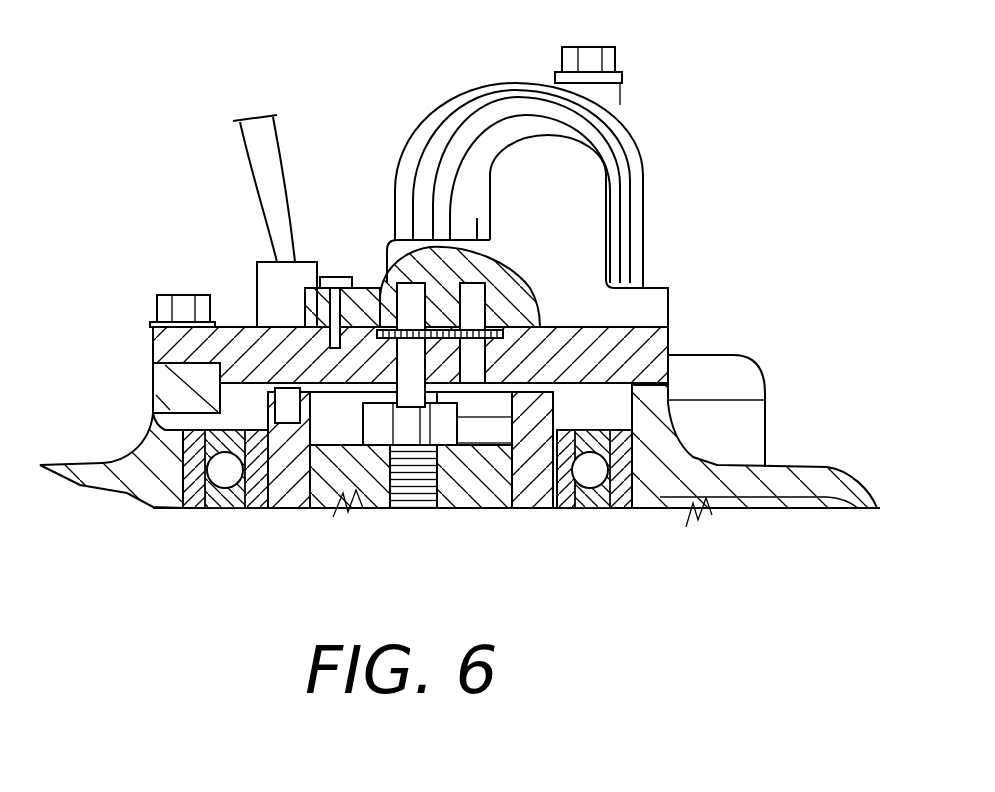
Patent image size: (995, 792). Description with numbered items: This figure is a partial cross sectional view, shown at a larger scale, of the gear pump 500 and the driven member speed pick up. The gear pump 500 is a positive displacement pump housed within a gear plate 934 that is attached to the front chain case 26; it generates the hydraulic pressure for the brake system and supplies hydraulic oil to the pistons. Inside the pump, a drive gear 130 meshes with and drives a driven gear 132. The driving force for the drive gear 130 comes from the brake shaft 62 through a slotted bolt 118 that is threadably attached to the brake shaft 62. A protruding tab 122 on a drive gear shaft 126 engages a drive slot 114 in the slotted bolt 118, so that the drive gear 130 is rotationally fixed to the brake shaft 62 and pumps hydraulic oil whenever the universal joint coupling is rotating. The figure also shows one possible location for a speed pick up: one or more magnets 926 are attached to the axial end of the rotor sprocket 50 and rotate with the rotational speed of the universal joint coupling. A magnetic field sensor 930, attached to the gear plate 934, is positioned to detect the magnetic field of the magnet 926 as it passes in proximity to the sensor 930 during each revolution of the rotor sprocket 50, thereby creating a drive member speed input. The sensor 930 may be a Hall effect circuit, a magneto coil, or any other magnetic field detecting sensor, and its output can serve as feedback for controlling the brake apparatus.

The front chain case 26 is at (673, 342).
The rotor sprocket 50 is at (288, 508).
The brake shaft 62 is at (507, 497).
The drive slot 114 is at (445, 393).
The slotted bolt 118 is at (425, 405).
The protruding tab 122 is at (440, 375).
The drive gear shaft 126 is at (395, 336).
The drive gear 130 is at (383, 293).
The driven gear 132 is at (497, 300).
The gear pump 500 is at (390, 226).
The magnet 926 is at (280, 416).
The magnetic field sensor 930 is at (267, 257).
The gear plate 934 is at (160, 353).